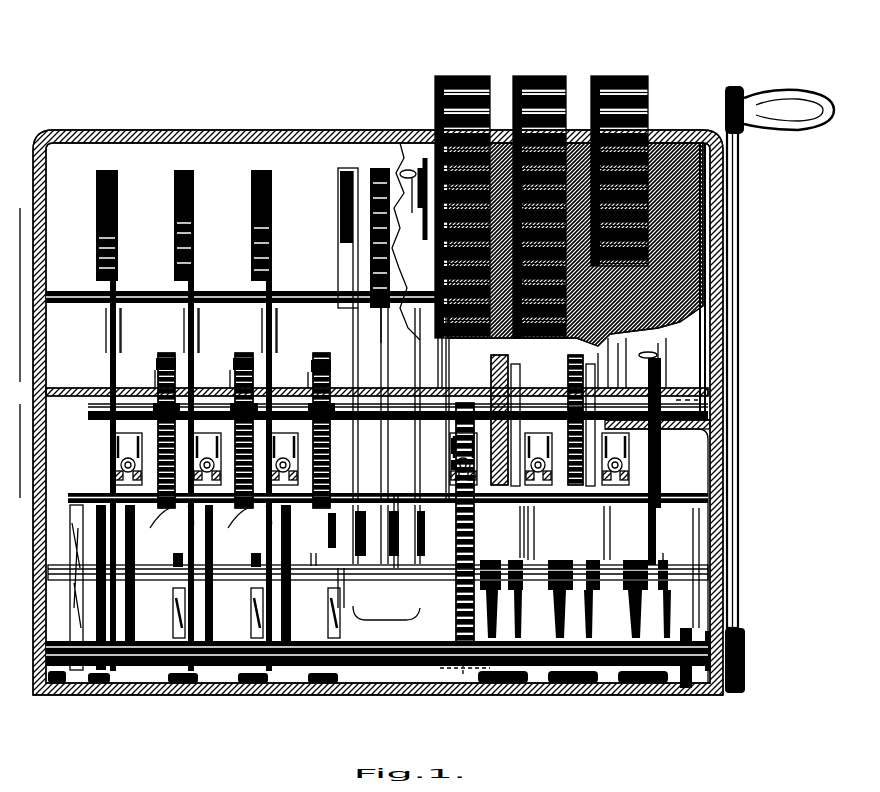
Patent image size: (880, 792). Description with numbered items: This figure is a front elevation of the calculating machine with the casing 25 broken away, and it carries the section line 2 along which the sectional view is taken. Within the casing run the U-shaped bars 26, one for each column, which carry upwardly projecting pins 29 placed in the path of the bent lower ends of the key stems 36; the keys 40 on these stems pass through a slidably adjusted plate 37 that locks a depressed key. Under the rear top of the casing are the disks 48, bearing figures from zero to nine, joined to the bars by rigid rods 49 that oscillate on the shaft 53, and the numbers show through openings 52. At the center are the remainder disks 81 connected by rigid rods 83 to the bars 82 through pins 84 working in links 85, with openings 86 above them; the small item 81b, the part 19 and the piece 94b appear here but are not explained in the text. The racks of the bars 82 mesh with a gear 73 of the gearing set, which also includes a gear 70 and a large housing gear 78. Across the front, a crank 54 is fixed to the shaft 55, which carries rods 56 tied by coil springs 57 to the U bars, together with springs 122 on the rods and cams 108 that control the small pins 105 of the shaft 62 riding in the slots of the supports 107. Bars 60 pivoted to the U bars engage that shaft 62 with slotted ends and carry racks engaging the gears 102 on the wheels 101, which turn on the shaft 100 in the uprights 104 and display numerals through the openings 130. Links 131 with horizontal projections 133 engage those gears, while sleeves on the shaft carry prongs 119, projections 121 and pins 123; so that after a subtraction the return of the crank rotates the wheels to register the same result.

The section line 2 is at (776, 393).
The lever 19 is at (512, 506).
The casing 25 is at (242, 122).
The bars 26 is at (443, 459).
The upwardly projecting pins 29 is at (443, 436).
The key stems 36 is at (474, 362).
The slidably adjusted plate 37 is at (472, 378).
The keys 40 is at (455, 72).
The disks 48 is at (95, 162).
The rigid rods 49 is at (112, 340).
The openings 52 is at (575, 240).
The shaft 53 is at (137, 282).
The crank 54 is at (731, 176).
The shaft 55 is at (336, 633).
The rods 56 is at (127, 601).
The coil springs 57 is at (120, 449).
The bars 60 is at (479, 551).
The shaft 62 is at (386, 485).
The gear 70 is at (131, 583).
The gear 73 is at (384, 591).
The large gear 78 is at (447, 620).
The disks 81 is at (336, 163).
The indicator pointer 81b is at (374, 325).
The bars 82 is at (347, 538).
The rigid rods 83 is at (350, 250).
The pins 84 is at (377, 534).
The links 85 is at (386, 618).
The openings 86 is at (398, 162).
The sector arms 94b is at (522, 552).
The shaft 100 is at (363, 418).
The wheels 101 is at (148, 345).
The gear 102 is at (149, 372).
The uprights 104 is at (80, 406).
The small pins 105 is at (62, 491).
The supports 107 is at (88, 519).
The cams 108 is at (70, 560).
The prongs 119 is at (227, 524).
The projections 121 is at (195, 525).
The springs 122 is at (127, 541).
The pins 123 is at (190, 378).
The openings 130 is at (632, 363).
The links 131 is at (254, 540).
The horizontal projections 133 is at (160, 347).